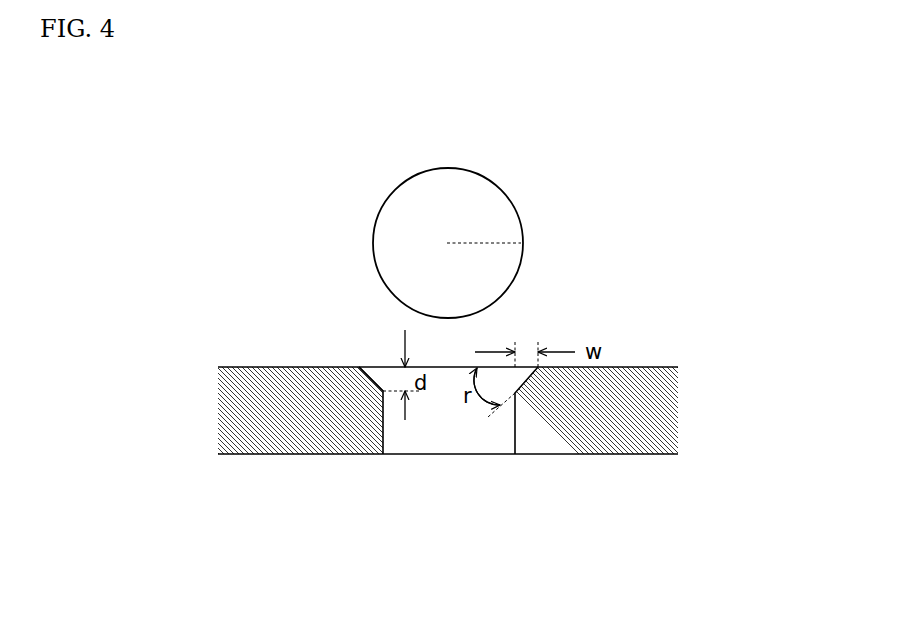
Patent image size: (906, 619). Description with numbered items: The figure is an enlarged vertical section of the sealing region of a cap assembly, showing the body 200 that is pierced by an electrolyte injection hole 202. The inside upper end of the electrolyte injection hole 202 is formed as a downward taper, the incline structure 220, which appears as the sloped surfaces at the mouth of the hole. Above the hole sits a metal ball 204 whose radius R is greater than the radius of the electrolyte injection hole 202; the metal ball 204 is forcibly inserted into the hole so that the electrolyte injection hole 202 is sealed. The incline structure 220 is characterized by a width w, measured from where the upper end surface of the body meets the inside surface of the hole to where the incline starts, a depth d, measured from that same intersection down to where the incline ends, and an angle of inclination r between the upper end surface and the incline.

The substrate 200 is at (217, 392).
The electrolyte injection hole 202 is at (452, 440).
The metal ball 204 is at (505, 192).
The incline structure 220 is at (375, 368).